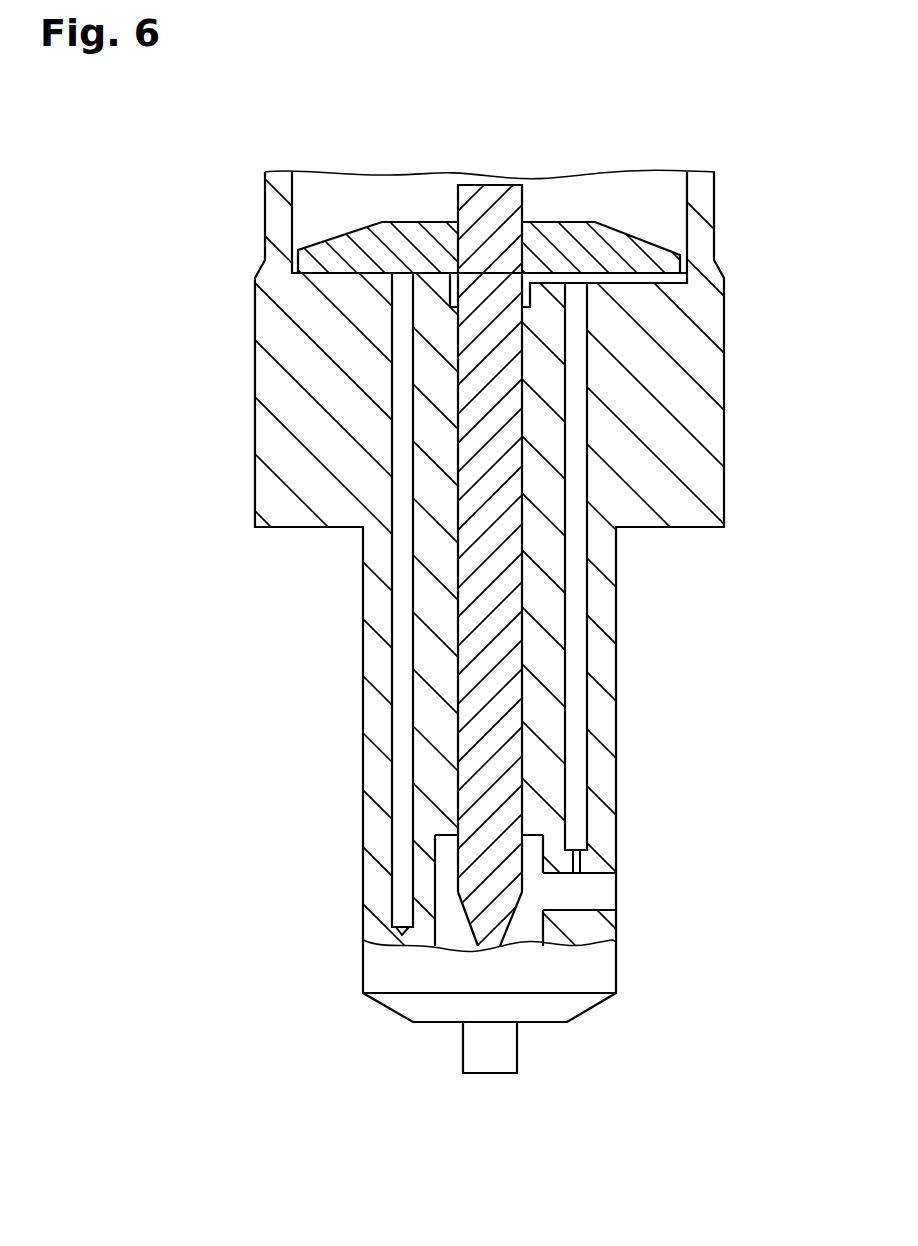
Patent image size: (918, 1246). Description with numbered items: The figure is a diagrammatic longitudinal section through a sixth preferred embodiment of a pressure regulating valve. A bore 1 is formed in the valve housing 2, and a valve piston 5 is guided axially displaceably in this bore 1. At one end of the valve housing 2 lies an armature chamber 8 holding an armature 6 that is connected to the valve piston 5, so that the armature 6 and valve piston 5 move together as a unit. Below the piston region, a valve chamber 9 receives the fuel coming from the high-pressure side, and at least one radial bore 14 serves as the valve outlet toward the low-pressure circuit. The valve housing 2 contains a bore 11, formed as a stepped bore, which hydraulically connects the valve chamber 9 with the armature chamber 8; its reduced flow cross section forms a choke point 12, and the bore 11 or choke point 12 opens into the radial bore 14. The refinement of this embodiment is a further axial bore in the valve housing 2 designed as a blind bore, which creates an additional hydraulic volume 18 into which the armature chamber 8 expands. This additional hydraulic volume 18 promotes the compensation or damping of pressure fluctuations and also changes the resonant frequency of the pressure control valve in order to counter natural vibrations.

The bore 1 is at (458, 738).
The valve housing 2 is at (390, 582).
The valve piston 5 is at (473, 672).
The armature 6 is at (610, 252).
The armature chamber 8 is at (345, 216).
The valve chamber 9 is at (448, 911).
The bore 11 is at (575, 615).
The choke point 12 is at (580, 835).
The radial bore 14 is at (585, 895).
The additional hydraulic volume 18 is at (403, 507).